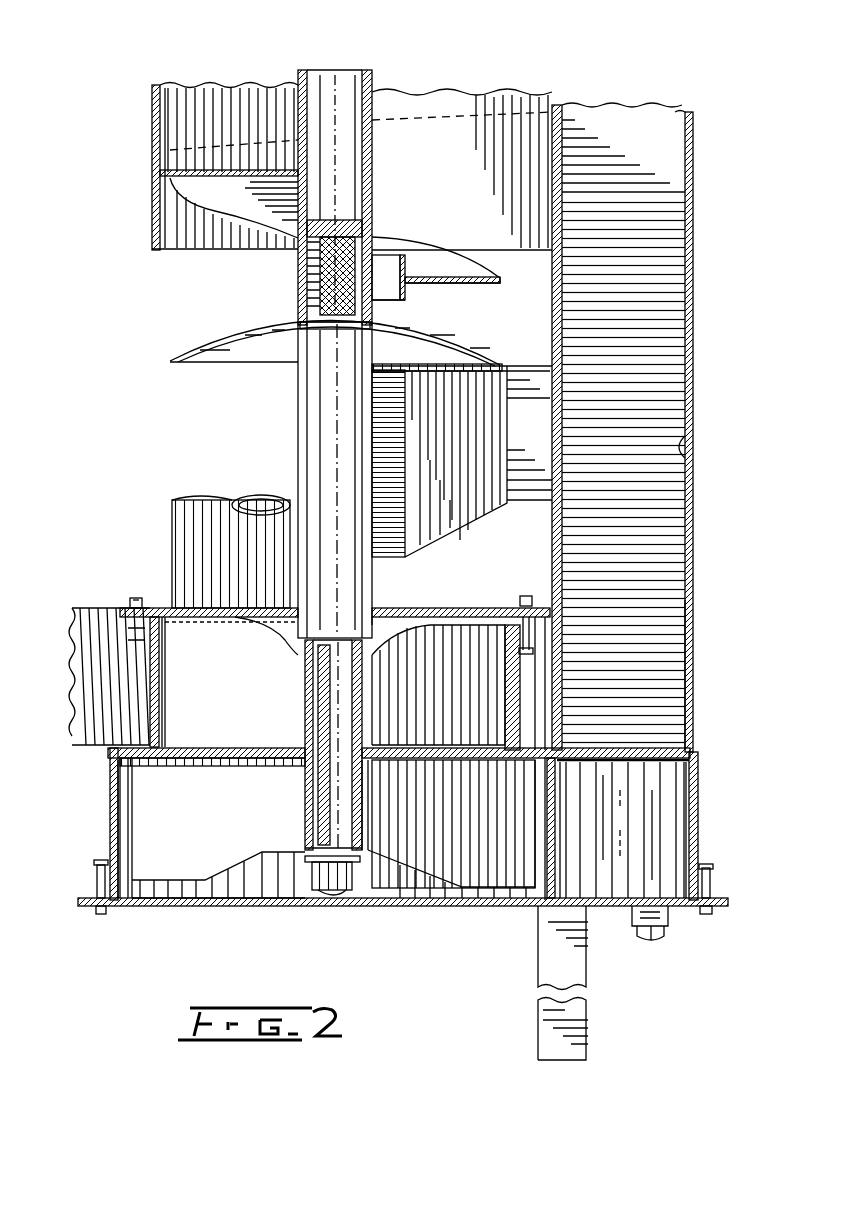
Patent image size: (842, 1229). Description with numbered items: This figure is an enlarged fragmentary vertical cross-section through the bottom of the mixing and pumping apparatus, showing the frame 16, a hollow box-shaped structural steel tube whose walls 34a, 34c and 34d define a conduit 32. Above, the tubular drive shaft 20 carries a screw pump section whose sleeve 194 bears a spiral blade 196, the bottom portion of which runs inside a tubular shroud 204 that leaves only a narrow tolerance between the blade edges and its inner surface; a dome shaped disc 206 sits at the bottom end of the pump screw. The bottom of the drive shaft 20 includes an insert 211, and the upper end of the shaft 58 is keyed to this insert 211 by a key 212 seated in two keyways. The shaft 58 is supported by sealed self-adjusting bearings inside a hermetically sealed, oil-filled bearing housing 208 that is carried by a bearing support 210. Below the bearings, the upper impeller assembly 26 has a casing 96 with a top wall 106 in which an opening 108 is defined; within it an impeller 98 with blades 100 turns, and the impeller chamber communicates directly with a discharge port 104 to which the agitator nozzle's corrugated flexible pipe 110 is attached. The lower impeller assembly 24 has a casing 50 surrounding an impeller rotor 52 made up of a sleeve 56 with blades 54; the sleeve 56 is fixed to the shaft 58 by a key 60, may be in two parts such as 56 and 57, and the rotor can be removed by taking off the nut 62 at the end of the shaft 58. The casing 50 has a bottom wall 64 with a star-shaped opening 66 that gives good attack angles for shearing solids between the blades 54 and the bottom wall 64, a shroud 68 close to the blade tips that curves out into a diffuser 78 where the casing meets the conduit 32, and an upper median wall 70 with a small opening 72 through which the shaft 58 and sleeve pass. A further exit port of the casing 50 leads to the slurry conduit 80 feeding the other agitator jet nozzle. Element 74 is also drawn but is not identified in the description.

The frame 16 is at (697, 350).
The drive shaft 20 is at (365, 100).
The impeller assembly 24 is at (92, 912).
The impeller assembly 26 is at (135, 598).
The conduit 32 is at (685, 440).
The wall 34a is at (690, 628).
The wall 34c is at (553, 526).
The wall 34d is at (640, 555).
The casing 50 is at (105, 818).
The impeller rotor 52 is at (467, 893).
The blades 54 is at (510, 880).
The sleeve 56 is at (372, 875).
The sleeve part 57 is at (442, 645).
The shaft 58 is at (340, 298).
The key 60 is at (310, 780).
The nut 62 is at (316, 872).
The bottom wall 64 is at (160, 908).
The opening 66 is at (240, 903).
The shroud 68 is at (108, 843).
The median wall 70 is at (120, 773).
The opening 72 is at (382, 806).
The support post 74 is at (548, 1022).
The diffuser 78 is at (690, 822).
The slurry conduit 80 is at (197, 517).
The casing 96 is at (160, 604).
The impeller 98 is at (464, 612).
The blades 100 is at (467, 670).
The discharge port 104 is at (150, 693).
The top wall 106 is at (513, 622).
The opening 108 is at (383, 604).
The flexible pipe 110 is at (105, 612).
The sleeve 194 is at (372, 100).
The spiral blade 196 is at (235, 200).
The tubular shroud 204 is at (160, 252).
The dome shaped disc 206 is at (215, 357).
The bearing housing 208 is at (322, 441).
The bearing support 210 is at (455, 405).
The insert 211 is at (305, 236).
The key 212 is at (305, 290).